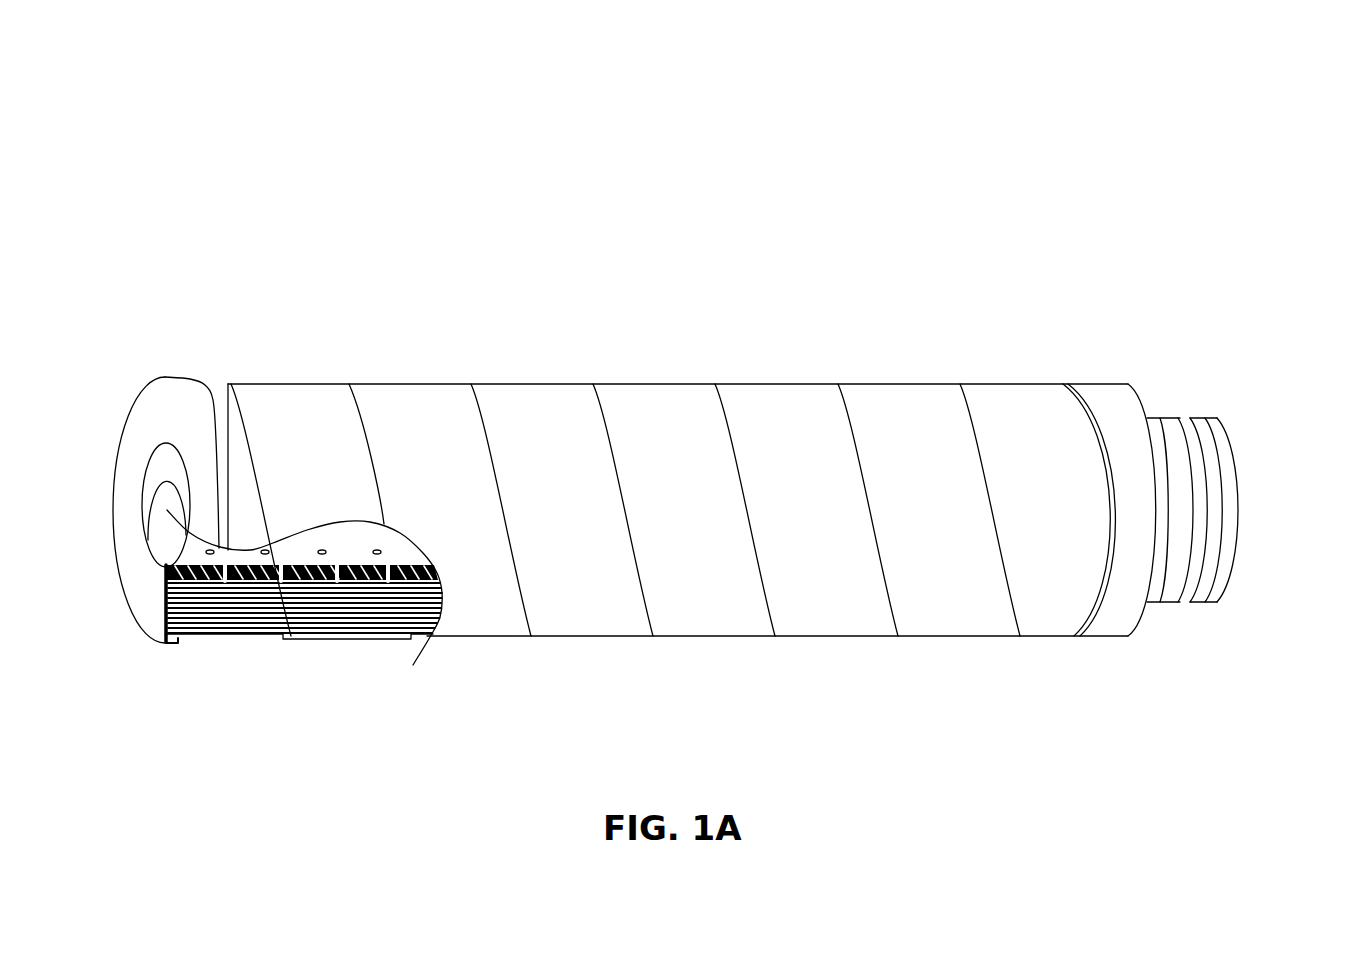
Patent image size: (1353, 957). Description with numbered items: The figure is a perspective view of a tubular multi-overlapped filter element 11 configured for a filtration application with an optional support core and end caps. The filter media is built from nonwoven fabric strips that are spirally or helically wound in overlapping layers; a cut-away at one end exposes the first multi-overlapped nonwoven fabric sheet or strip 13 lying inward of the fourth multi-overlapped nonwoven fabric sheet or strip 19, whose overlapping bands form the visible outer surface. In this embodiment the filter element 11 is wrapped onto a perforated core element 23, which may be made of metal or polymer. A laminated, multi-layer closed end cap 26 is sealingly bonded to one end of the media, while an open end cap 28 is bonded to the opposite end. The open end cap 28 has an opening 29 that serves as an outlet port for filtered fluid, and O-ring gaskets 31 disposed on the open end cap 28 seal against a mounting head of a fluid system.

The filter element 11 is at (1153, 158).
The first multi-overlapped nonwoven fabric sheet or strip 13 is at (353, 600).
The fourth multi-overlapped nonwoven fabric sheet or strip 19 is at (713, 620).
The perforated core element 23 is at (266, 578).
The closed end cap 26 is at (143, 418).
The open end cap 28 is at (1110, 398).
The opening 29 is at (1233, 455).
The O-ring gaskets 31 is at (1205, 601).